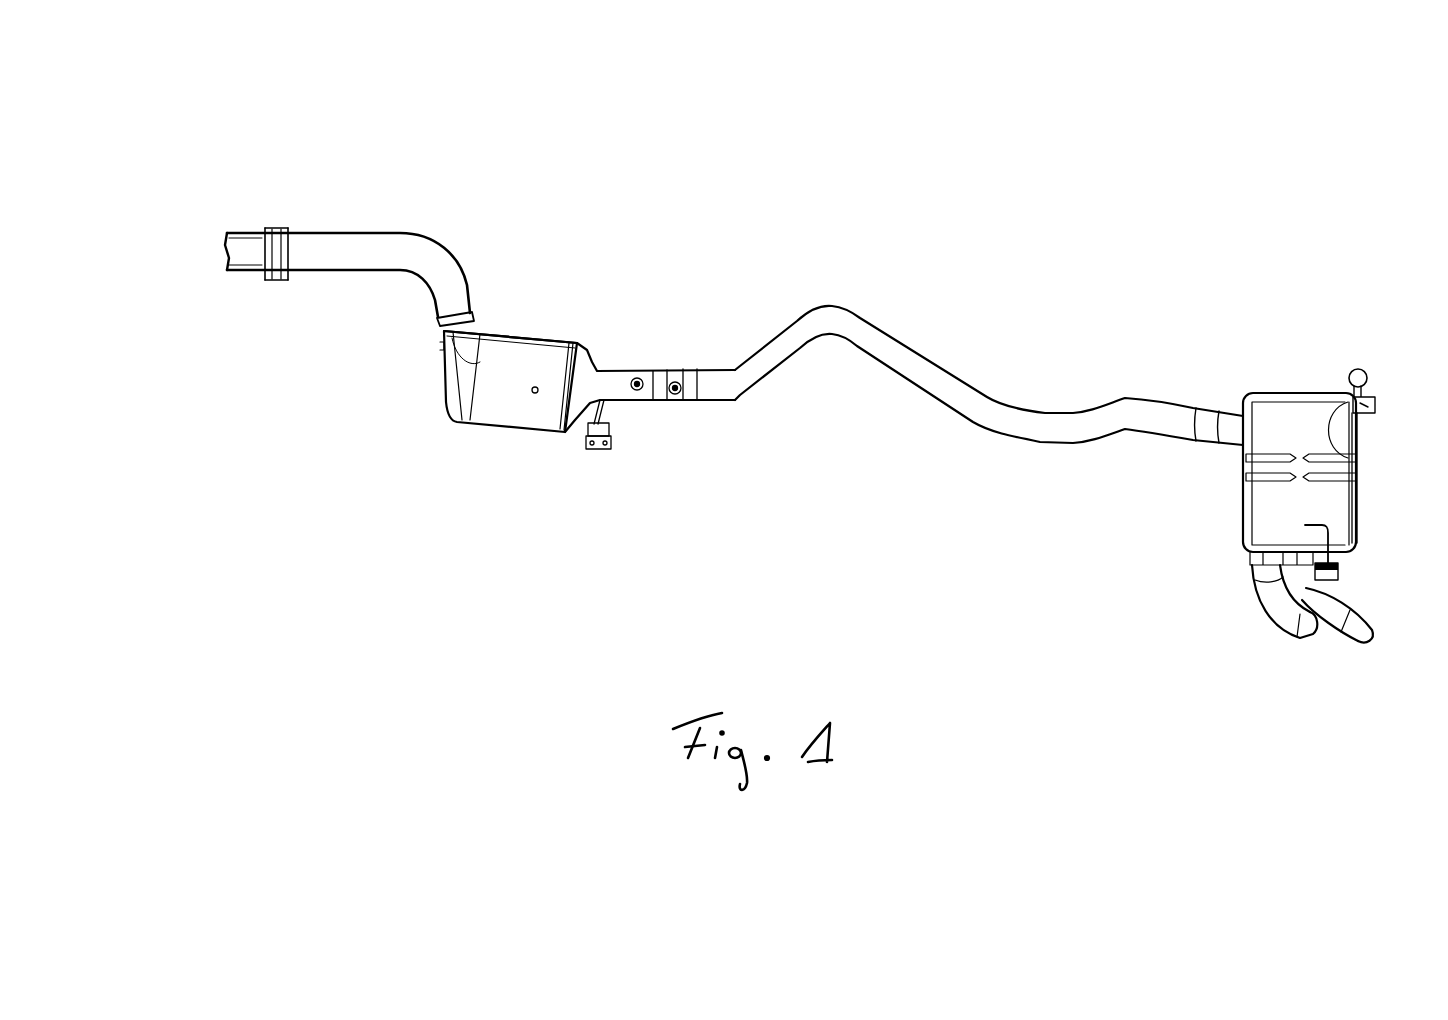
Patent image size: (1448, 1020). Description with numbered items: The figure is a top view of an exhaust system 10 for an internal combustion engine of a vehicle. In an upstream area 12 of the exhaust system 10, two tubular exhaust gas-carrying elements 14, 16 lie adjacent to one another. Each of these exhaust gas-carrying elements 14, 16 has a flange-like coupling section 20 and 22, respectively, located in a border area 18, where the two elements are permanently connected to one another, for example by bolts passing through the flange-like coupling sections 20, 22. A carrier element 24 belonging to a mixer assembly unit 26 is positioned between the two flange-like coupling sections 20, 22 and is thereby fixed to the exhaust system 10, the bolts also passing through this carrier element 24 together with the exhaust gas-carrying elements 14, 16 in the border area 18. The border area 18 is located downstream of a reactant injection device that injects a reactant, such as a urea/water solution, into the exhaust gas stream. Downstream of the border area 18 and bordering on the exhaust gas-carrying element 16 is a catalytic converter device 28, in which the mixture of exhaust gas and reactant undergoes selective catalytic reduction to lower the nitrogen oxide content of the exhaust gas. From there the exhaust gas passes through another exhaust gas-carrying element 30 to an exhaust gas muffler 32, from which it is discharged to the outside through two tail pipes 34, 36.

The exhaust system 10 is at (1090, 243).
The upstream area 12 is at (167, 224).
The exhaust gas-carrying element 14 is at (230, 273).
The exhaust gas-carrying element 16 is at (395, 233).
The border area 18 is at (300, 308).
The flange-like coupling section 20 is at (266, 227).
The flange-like coupling section 22 is at (292, 227).
The carrier element 24 is at (278, 283).
The mixer assembly unit 26 is at (279, 197).
The catalytic converter device 28 is at (510, 407).
The exhaust gas-carrying element 30 is at (928, 359).
The exhaust gas muffler 32 is at (1263, 502).
The tail pipe 34 is at (1280, 627).
The tail pipe 36 is at (1342, 603).